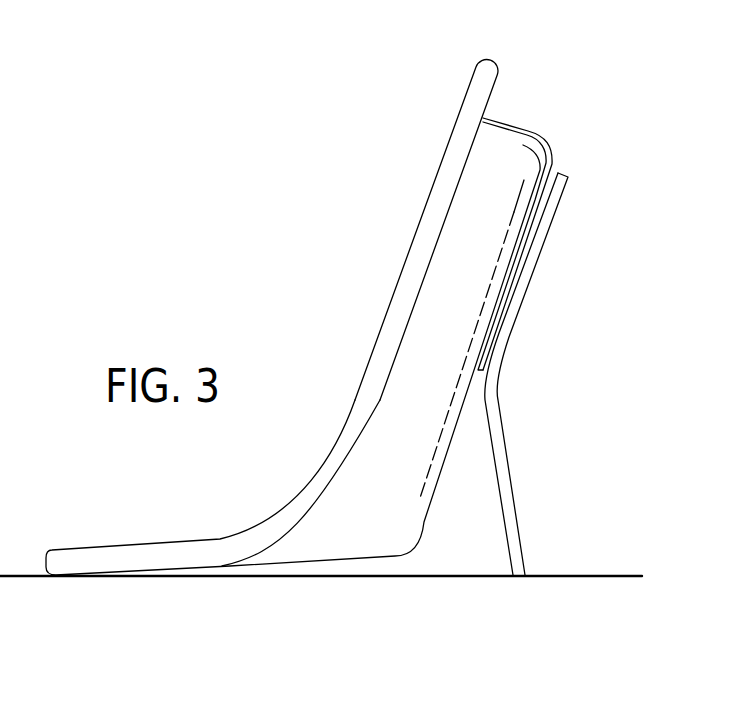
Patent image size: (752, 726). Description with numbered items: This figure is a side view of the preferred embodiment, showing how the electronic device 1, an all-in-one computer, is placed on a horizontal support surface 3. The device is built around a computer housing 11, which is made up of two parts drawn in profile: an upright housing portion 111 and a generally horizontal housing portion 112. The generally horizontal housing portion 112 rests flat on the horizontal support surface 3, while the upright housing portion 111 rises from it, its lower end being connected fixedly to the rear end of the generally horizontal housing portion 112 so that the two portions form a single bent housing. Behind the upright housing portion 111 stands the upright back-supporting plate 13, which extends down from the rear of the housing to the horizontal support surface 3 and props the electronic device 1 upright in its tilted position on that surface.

The electronic device 1 is at (644, 116).
The computer housing 11 is at (505, 73).
The upright housing portion 111 is at (447, 178).
The generally horizontal housing portion 112 is at (145, 553).
The upright back-supporting plate 13 is at (507, 477).
The horizontal support surface 3 is at (612, 573).